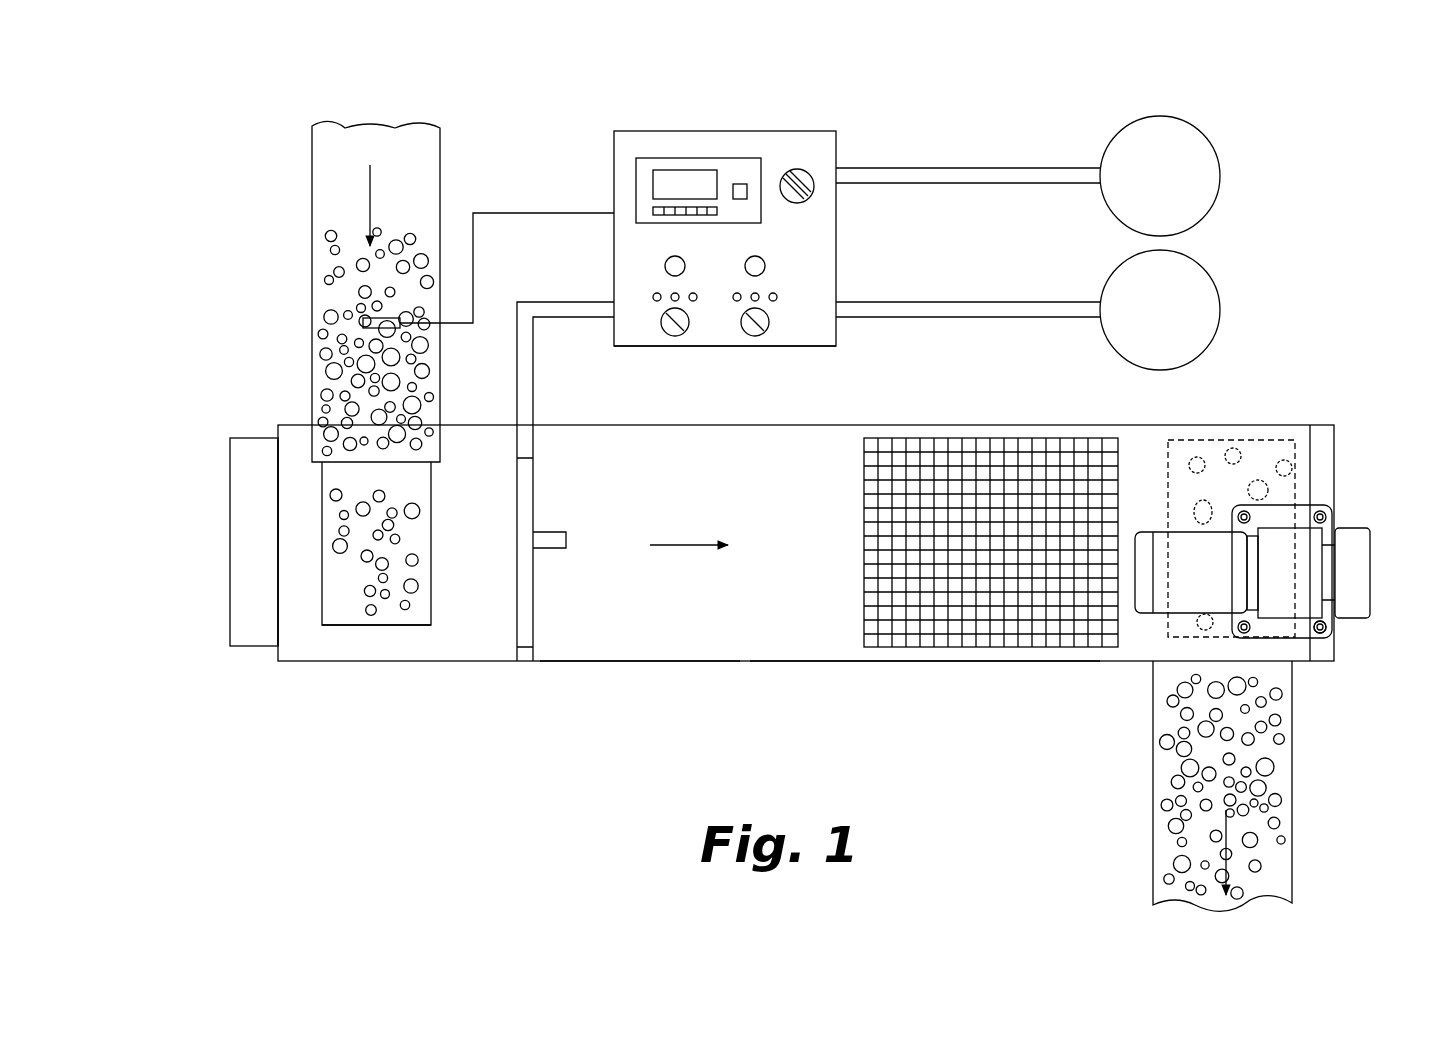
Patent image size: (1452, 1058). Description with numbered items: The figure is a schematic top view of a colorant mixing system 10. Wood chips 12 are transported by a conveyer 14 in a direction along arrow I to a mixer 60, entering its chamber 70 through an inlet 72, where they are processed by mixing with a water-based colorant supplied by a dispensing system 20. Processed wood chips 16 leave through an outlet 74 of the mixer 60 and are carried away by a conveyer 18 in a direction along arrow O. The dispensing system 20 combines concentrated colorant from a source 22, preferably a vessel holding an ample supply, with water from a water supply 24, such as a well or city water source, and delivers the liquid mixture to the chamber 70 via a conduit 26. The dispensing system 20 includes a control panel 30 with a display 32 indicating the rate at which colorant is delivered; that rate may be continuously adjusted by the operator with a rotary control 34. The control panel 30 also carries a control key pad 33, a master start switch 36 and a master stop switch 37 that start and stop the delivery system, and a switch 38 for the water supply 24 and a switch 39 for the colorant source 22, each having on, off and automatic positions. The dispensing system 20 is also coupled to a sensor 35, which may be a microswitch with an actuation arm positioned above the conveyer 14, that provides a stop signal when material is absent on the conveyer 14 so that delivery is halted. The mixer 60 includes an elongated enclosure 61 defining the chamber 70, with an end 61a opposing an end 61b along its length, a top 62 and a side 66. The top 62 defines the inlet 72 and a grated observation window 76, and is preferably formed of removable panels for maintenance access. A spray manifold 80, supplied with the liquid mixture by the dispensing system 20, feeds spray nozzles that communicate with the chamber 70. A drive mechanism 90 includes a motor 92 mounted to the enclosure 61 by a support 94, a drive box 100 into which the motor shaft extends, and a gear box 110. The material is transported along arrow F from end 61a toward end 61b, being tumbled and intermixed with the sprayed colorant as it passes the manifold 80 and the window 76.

The colorant mixing system 10 is at (689, 722).
The wood chips 12 is at (318, 370).
The conveyer 14 is at (448, 198).
The processed wood chips 16 is at (1284, 783).
The conveyer 18 is at (1300, 816).
The dispensing system 20 is at (848, 261).
The source 22 is at (1148, 191).
The water supply 24 is at (1148, 325).
The conduit 26 is at (534, 366).
The control panel 30 is at (780, 345).
The display 32 is at (670, 157).
The control key pad 33 is at (650, 208).
The rotary control 34 is at (805, 170).
The sensor 35 is at (400, 328).
The master start switch 36 is at (686, 263).
The master stop switch 37 is at (766, 263).
The switch 38 is at (667, 337).
The switch 39 is at (750, 337).
The mixer 60 is at (433, 668).
The enclosure 61 is at (750, 662).
The end 61a is at (230, 572).
The end 61b is at (1336, 486).
The top 62 is at (690, 507).
The side 66 is at (592, 662).
The chamber 70 is at (390, 612).
The inlet 72 is at (345, 626).
The outlet 74 is at (1292, 455).
The grated observation window 76 is at (971, 648).
The spray manifold 80 is at (534, 512).
The drive mechanism 90 is at (1366, 524).
The motor 92 is at (1186, 587).
The support 94 is at (1318, 636).
The drive box 100 is at (1370, 572).
The gear box 110 is at (236, 552).
The arrow F is at (688, 548).
The arrow I is at (372, 198).
The arrow O is at (1197, 838).